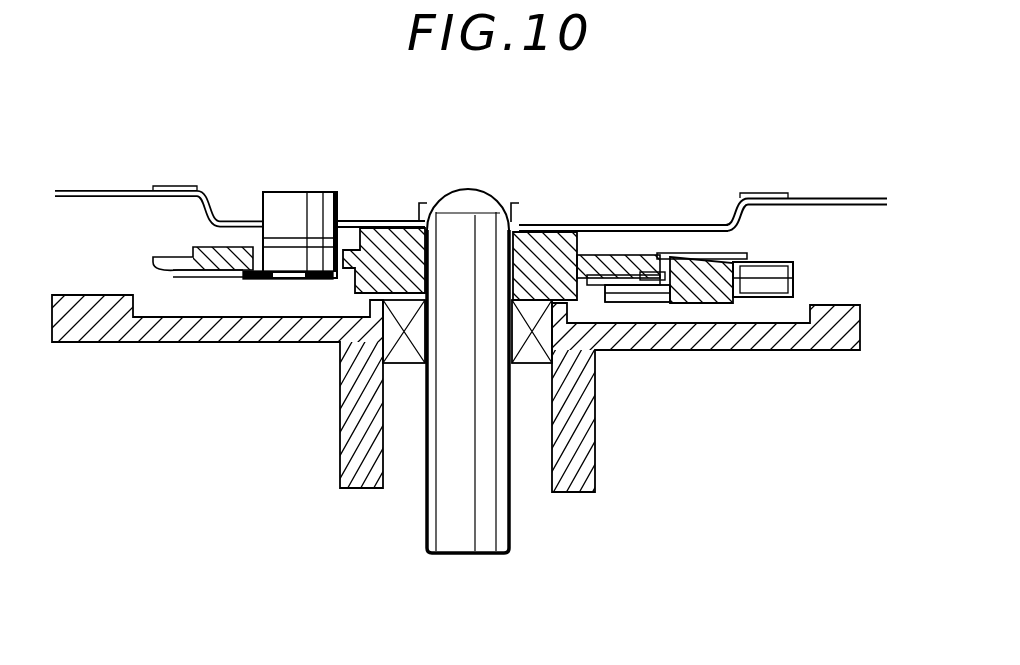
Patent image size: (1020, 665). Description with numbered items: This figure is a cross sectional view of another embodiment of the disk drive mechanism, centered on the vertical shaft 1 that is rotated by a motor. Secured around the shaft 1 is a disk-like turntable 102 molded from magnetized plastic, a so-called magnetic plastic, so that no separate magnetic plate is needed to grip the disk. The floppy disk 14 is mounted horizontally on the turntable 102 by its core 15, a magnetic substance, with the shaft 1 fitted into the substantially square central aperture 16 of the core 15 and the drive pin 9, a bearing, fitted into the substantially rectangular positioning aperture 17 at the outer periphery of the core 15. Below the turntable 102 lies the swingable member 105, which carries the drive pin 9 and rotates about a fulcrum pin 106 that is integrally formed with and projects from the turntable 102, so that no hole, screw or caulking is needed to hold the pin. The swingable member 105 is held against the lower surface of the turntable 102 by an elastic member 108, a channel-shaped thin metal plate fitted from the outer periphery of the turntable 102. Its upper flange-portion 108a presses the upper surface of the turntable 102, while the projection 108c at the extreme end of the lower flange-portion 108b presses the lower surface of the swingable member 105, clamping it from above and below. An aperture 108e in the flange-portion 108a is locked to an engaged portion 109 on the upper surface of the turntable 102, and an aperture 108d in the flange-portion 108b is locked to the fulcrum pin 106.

The shaft 1 is at (474, 218).
The drive pin 9 is at (300, 192).
The floppy disk 14 is at (841, 197).
The core 15 is at (622, 224).
The central aperture 16 is at (440, 203).
The positioning aperture 17 is at (340, 216).
The turntable 102 is at (217, 265).
The swingable member 105 is at (333, 280).
The fulcrum pin 106 is at (700, 305).
The elastic member 108 is at (802, 283).
The flange-portion 108a is at (790, 270).
The flange-portion 108b is at (657, 303).
The projection 108c is at (612, 287).
The aperture 108d is at (690, 305).
The aperture 108e is at (677, 257).
The engaged portion 109 is at (718, 258).